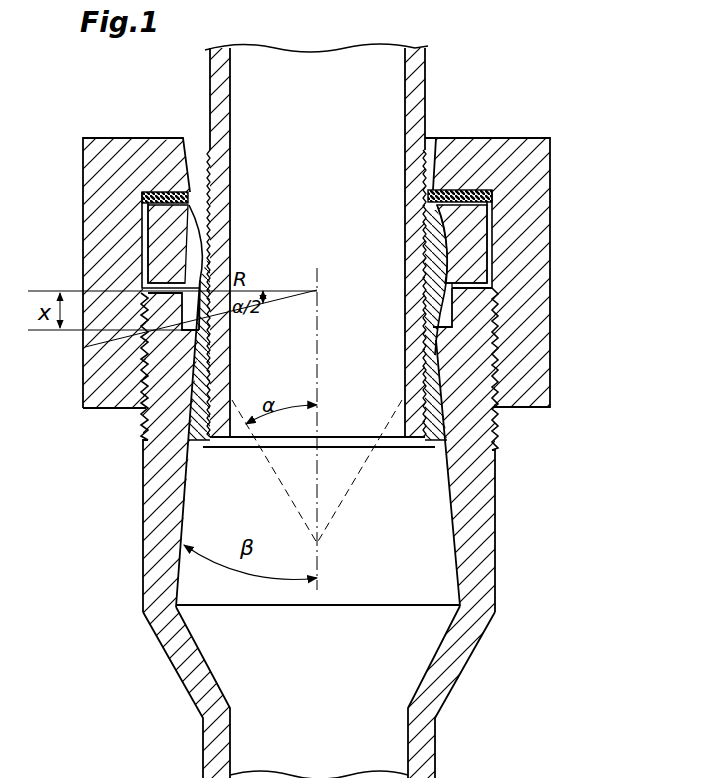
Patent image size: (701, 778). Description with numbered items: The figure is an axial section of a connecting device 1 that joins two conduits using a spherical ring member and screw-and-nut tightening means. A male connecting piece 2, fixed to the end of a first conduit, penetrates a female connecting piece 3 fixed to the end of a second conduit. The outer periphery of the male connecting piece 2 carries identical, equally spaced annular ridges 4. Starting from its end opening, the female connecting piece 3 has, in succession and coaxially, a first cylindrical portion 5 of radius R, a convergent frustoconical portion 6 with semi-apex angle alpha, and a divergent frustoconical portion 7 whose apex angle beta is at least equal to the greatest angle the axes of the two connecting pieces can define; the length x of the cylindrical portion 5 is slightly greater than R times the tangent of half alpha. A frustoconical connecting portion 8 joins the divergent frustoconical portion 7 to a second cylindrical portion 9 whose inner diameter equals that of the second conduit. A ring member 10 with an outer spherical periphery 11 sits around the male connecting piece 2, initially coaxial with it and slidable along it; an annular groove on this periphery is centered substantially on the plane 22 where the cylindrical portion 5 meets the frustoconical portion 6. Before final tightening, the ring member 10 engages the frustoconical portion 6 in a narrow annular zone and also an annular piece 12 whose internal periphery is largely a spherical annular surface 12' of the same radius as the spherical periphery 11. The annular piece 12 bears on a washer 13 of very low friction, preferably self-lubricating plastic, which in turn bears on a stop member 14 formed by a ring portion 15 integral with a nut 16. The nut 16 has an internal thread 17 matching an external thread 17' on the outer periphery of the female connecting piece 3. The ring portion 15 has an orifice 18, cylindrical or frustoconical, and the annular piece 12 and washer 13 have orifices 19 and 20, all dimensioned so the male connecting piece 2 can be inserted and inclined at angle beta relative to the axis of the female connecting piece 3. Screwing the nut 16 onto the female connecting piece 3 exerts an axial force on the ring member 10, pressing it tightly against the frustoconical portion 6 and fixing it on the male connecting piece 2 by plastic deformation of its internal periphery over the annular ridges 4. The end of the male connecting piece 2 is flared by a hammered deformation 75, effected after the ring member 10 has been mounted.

The connecting device 1 is at (523, 450).
The male connecting piece 2 is at (430, 69).
The female connecting piece 3 is at (510, 609).
The annular ridges 4 is at (208, 400).
The first cylindrical portion 5 is at (435, 310).
The convergent frustoconical portion 6 is at (450, 350).
The divergent frustoconical portion 7 is at (440, 520).
The frustoconical connecting portion 8 is at (418, 648).
The second cylindrical portion 9 is at (397, 735).
The ring member 10 is at (455, 252).
The outer spherical periphery 11 is at (476, 223).
The annular piece 12 is at (376, 239).
The spherical annular surface 12' is at (404, 280).
The washer 13 is at (493, 191).
The stop member 14 is at (468, 188).
The ring portion 15 is at (478, 152).
The nut 16 is at (92, 223).
The internal thread 17 is at (92, 389).
The external thread 17' is at (92, 424).
The orifice 18 is at (198, 143).
The orifice 19 is at (438, 215).
The orifice 20 is at (434, 200).
The plane of connection 22 is at (450, 345).
The deformation 75 is at (200, 453).